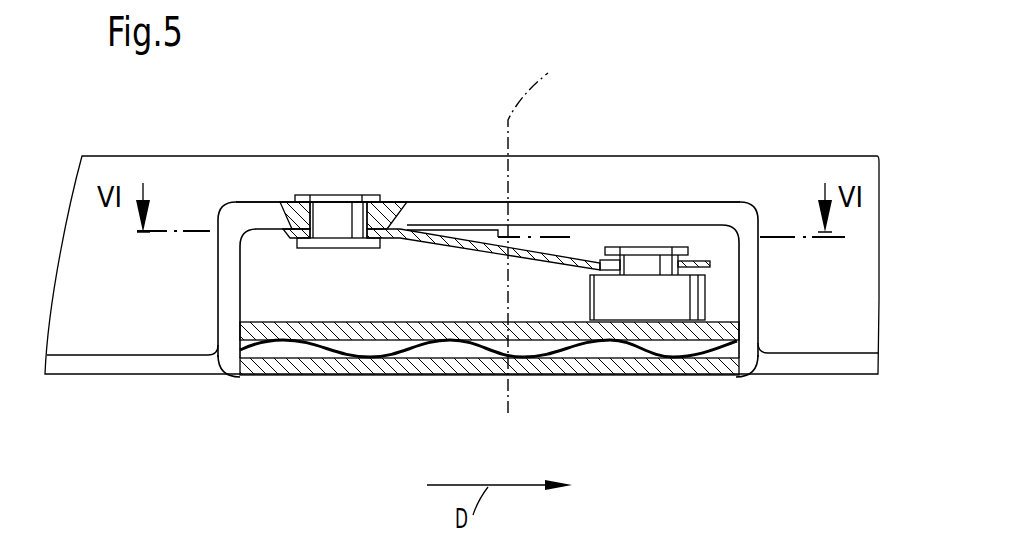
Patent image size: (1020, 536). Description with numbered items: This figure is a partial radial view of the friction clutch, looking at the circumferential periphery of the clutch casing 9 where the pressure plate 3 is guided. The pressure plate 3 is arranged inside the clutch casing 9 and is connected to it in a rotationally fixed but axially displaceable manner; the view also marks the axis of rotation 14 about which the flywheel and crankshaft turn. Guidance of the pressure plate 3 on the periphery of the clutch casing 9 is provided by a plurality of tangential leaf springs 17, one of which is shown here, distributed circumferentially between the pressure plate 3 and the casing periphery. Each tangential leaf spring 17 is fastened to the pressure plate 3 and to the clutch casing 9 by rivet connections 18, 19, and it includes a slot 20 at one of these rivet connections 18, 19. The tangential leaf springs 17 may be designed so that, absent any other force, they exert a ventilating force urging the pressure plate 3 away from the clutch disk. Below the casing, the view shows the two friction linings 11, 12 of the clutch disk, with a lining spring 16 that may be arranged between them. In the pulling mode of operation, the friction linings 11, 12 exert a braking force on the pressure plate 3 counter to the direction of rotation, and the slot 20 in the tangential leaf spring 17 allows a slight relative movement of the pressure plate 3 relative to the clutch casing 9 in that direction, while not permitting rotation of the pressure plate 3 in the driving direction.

The pressure plate 3 is at (412, 291).
The clutch casing 9 is at (608, 201).
The friction lining 11 is at (643, 326).
The friction lining 12 is at (577, 358).
The axis of rotation 14 is at (537, 227).
The lining spring 16 is at (472, 378).
The tangential leaf spring 17 is at (455, 238).
The rivet connection 18 is at (326, 210).
The rivet connection 19 is at (668, 274).
The slot 20 is at (618, 249).